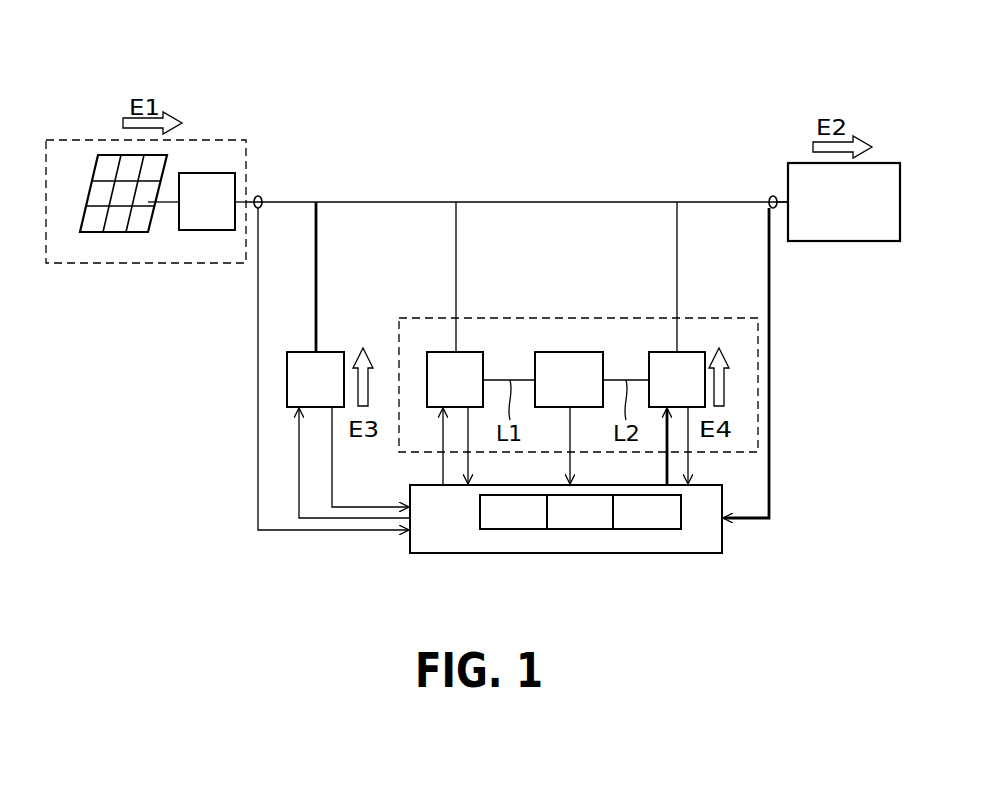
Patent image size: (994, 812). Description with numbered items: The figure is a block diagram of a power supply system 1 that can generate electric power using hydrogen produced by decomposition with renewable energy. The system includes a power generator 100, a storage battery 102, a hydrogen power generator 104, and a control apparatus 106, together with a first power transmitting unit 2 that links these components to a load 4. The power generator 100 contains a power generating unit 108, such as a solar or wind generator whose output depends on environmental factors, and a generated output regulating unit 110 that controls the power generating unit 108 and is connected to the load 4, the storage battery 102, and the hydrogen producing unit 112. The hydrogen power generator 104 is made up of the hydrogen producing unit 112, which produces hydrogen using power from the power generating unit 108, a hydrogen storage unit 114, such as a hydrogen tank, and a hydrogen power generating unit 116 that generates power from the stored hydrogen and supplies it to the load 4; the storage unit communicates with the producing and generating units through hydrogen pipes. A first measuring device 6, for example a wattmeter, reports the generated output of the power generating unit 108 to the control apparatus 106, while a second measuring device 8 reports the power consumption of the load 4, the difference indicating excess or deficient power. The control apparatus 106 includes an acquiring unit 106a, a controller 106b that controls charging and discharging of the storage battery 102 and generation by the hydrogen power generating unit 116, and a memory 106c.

The power supply system 1 is at (596, 80).
The first power transmitting unit 2 is at (392, 199).
The load 4 is at (838, 241).
The first measuring device 6 is at (262, 196).
The second measuring device 8 is at (769, 196).
The power generator 100 is at (220, 140).
The storage battery 102 is at (336, 350).
The hydrogen power generator 104 is at (533, 312).
The control apparatus 106 is at (683, 553).
The acquiring unit 106a is at (502, 529).
The controller 106b is at (578, 529).
The memory 106c is at (647, 529).
The power generating unit 108 is at (110, 232).
The generated output regulating unit 110 is at (207, 230).
The hydrogen producing unit 112 is at (460, 350).
The hydrogen storage unit 114 is at (570, 350).
The hydrogen power generating unit 116 is at (690, 350).